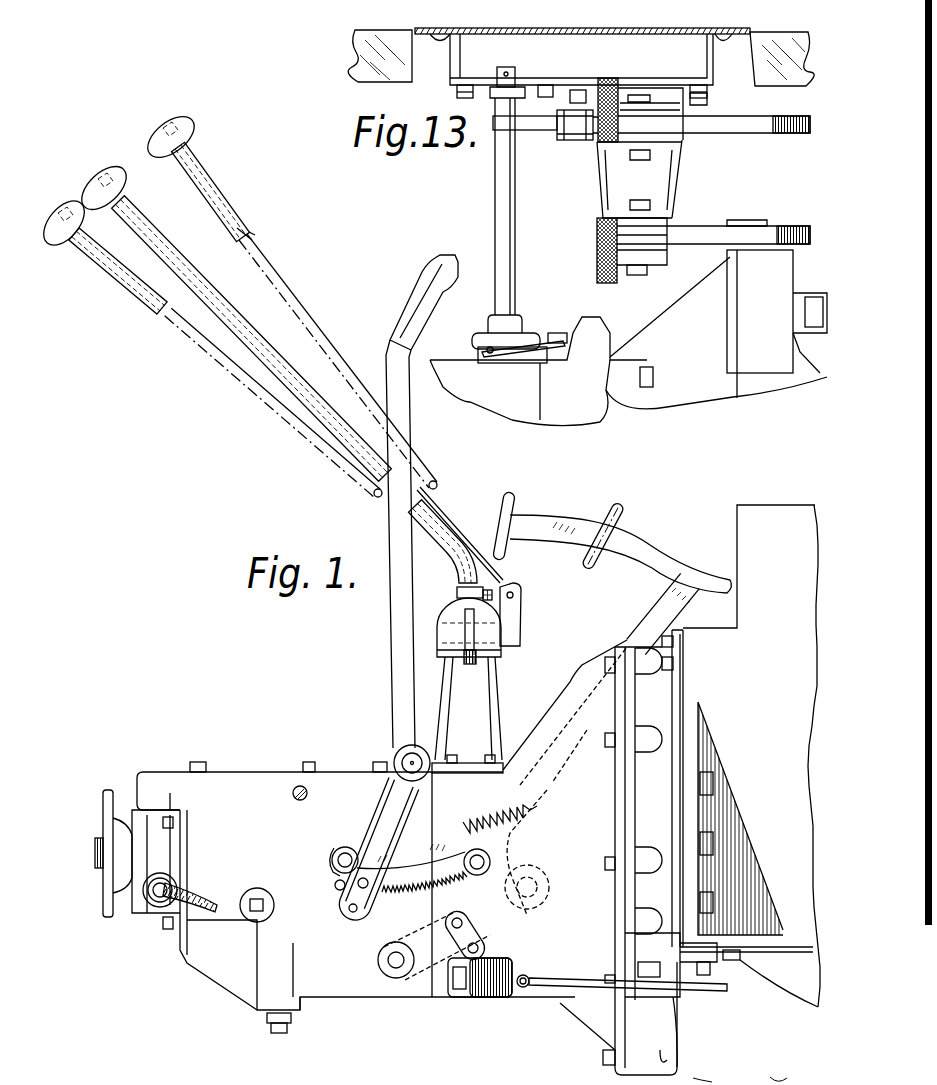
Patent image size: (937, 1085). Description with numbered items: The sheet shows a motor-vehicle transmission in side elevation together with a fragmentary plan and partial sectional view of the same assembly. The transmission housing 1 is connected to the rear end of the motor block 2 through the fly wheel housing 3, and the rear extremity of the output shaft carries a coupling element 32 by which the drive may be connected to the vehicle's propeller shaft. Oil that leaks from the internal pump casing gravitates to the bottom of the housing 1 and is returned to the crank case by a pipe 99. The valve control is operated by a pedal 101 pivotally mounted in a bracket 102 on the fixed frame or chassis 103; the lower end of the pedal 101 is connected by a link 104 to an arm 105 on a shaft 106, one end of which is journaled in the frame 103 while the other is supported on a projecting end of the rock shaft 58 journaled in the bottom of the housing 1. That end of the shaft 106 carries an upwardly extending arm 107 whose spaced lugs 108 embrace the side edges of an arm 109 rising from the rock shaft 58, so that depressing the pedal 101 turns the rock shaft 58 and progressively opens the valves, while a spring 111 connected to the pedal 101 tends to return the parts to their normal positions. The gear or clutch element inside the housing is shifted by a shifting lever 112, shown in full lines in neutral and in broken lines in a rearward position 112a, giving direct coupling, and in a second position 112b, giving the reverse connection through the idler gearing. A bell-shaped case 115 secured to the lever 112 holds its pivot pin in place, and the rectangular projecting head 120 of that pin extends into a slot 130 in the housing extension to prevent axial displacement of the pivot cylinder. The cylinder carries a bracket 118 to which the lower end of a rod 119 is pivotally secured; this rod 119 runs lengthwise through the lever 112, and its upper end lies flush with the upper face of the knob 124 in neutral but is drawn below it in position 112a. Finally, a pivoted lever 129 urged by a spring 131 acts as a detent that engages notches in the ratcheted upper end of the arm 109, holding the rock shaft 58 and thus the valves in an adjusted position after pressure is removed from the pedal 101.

In FIG. 13, the housing 1 is at (637, 340).
In FIG. 1, the housing 1 is at (234, 782).
In FIG. 1, the motor block 2 is at (743, 522).
In FIG. 1, the fly wheel housing 3 is at (625, 646).
In FIG. 1, the coupling element 32 is at (101, 803).
In FIG. 1, the rock shaft 58 is at (393, 968).
In FIG. 1, the pipe 99 is at (581, 982).
In FIG. 13, the pedal 101 is at (723, 134).
In FIG. 1, the pedal 101 is at (557, 523).
In FIG. 13, the bracket 102 is at (673, 185).
In FIG. 13, the frame or chassis 103 is at (757, 67).
In FIG. 13, the link 104 is at (577, 134).
In FIG. 1, the link 104 is at (465, 915).
In FIG. 13, the arm 105 is at (540, 123).
In FIG. 1, the arm 105 is at (423, 923).
In FIG. 13, the shaft 106 is at (495, 187).
In FIG. 13, the arm 107 is at (495, 333).
In FIG. 13, the lugs 108 is at (482, 352).
In FIG. 13, the arm 109 is at (480, 340).
In FIG. 1, the spring 111 is at (525, 817).
In FIG. 1, the shifting lever 112 is at (231, 293).
In FIG. 1, the shifting lever rearward position 112a is at (187, 333).
In FIG. 1, the shifting lever reverse position 112b is at (305, 315).
In FIG. 1, the bell-shaped case 115 is at (507, 630).
In FIG. 1, the bracket 118 is at (513, 610).
In FIG. 1, the rod 119 is at (158, 121).
In FIG. 1, the projecting head 120 is at (467, 627).
In FIG. 1, the knob 124 is at (127, 182).
In FIG. 13, the pivoted lever 129 is at (490, 352).
In FIG. 1, the slot 130 is at (470, 665).
In FIG. 13, the spring 131 is at (510, 357).